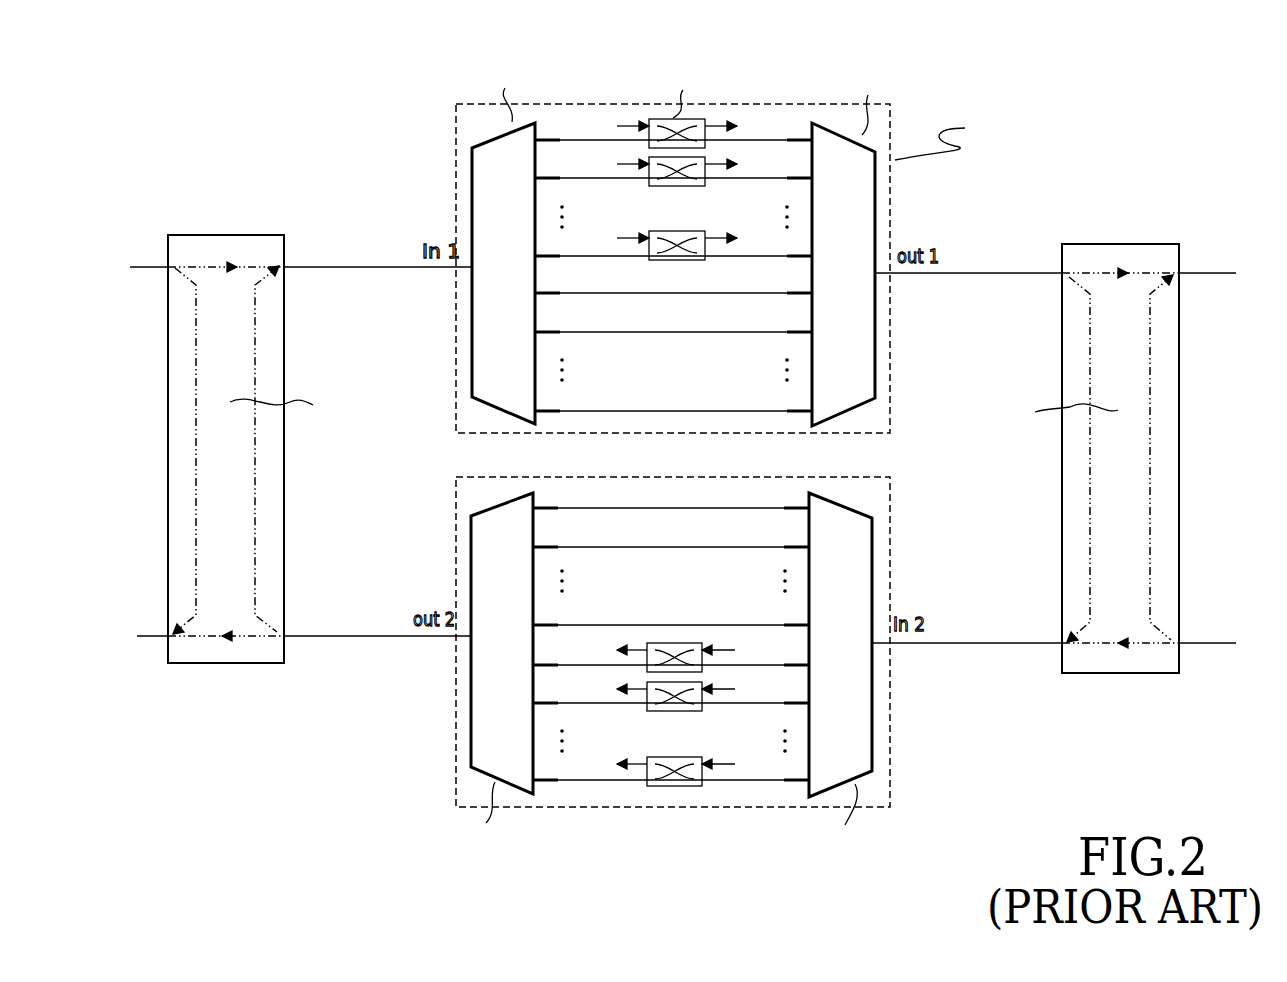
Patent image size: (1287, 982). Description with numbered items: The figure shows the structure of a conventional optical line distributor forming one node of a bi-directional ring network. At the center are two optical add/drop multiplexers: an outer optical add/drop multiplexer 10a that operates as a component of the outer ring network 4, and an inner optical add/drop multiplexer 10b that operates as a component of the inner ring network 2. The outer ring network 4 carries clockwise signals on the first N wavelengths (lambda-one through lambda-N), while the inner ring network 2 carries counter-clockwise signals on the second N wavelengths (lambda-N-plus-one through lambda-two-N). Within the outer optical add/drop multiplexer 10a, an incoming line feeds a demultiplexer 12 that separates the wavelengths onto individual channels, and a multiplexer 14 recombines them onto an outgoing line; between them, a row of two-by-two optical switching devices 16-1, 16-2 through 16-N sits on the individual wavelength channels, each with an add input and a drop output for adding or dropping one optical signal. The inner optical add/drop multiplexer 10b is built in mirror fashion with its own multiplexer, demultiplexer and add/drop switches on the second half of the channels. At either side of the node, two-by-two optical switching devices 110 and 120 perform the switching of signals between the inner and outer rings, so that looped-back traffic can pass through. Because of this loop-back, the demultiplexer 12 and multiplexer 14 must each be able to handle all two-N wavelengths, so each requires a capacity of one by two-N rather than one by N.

The inner ring network 2 is at (990, 643).
The outer ring network 4 is at (960, 274).
The outer optical add/drop multiplexer 10a is at (890, 315).
The inner optical add/drop multiplexer 10b is at (890, 540).
The demultiplexer 12 is at (512, 419).
The multiplexer 14 is at (826, 428).
The 2×2 optical switching device 16-1 is at (700, 119).
The 2×2 optical switching device 16-2 is at (700, 186).
The 2×2 optical switching device 16-N is at (700, 260).
The 2×2 optical switching device 110 is at (225, 663).
The 2×2 optical switching device 120 is at (1110, 673).